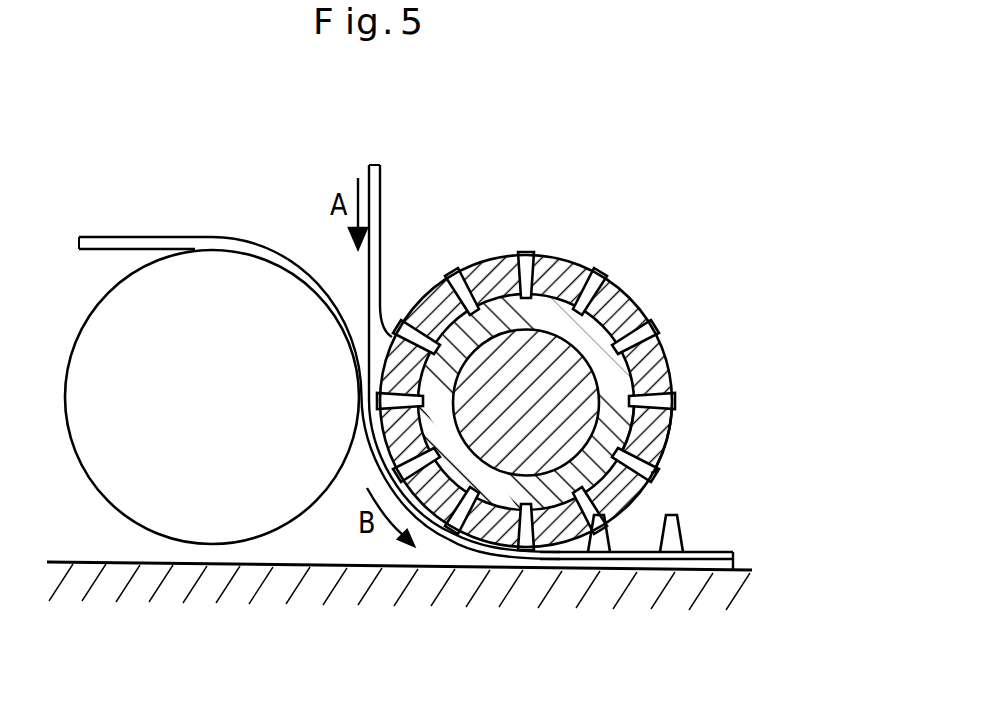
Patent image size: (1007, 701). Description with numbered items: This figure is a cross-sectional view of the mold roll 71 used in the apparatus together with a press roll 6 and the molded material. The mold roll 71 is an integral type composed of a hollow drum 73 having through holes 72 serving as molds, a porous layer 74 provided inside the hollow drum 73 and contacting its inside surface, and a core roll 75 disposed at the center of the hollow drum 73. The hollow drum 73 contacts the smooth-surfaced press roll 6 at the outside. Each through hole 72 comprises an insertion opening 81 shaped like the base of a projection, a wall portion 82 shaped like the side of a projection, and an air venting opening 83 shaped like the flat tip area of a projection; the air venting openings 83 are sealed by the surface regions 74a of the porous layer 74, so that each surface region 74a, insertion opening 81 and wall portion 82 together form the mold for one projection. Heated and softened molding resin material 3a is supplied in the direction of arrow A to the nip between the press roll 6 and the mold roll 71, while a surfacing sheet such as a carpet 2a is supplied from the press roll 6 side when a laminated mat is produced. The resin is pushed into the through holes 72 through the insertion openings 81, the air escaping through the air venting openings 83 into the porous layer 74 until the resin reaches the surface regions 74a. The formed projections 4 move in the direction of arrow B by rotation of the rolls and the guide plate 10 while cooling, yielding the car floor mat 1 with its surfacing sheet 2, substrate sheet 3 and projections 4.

The car floor mat 1 is at (671, 579).
The surfacing sheet 2 is at (670, 567).
The carpet 2a is at (152, 236).
The substrate sheet 3 is at (636, 557).
The molding resin material 3a is at (383, 200).
The projections 4 is at (678, 536).
The press roll 6 is at (232, 412).
The guide plate 10 is at (322, 585).
The mold roll 71 is at (554, 348).
The through holes 72 is at (554, 383).
The hollow drum 73 is at (621, 306).
The porous layer 74 is at (546, 395).
The surface region 74a is at (617, 332).
The core roll 75 is at (565, 360).
The insertion opening 81 is at (675, 399).
The wall portion 82 is at (663, 410).
The air venting opening 83 is at (652, 473).